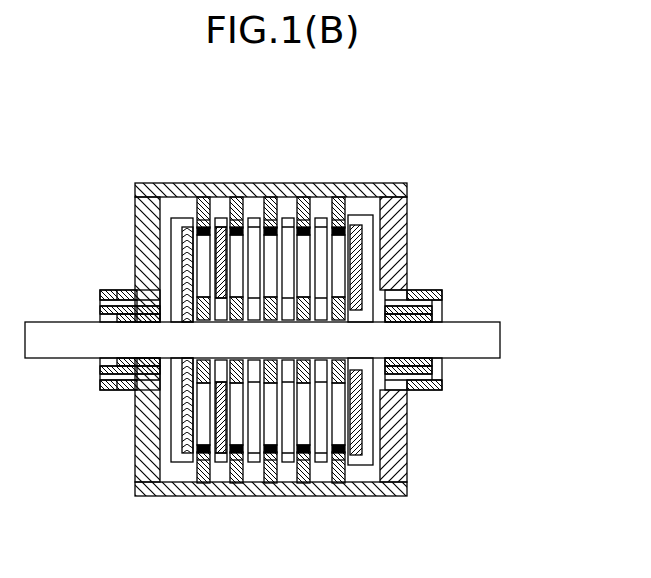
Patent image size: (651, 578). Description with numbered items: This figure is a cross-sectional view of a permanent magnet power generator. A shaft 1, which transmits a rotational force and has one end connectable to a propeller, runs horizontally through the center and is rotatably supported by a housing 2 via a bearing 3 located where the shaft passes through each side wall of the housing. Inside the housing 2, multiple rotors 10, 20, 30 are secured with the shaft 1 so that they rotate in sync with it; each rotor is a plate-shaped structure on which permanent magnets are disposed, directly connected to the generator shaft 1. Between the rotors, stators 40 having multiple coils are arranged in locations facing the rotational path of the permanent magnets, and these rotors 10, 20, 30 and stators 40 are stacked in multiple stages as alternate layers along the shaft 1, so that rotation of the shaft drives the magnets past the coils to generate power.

The shaft 1 is at (63, 326).
The housing 2 is at (133, 187).
The bearing 3 is at (128, 392).
The rotor 10 is at (190, 200).
The rotor 20 is at (231, 183).
The rotor 30 is at (367, 203).
The stator 40 is at (288, 183).